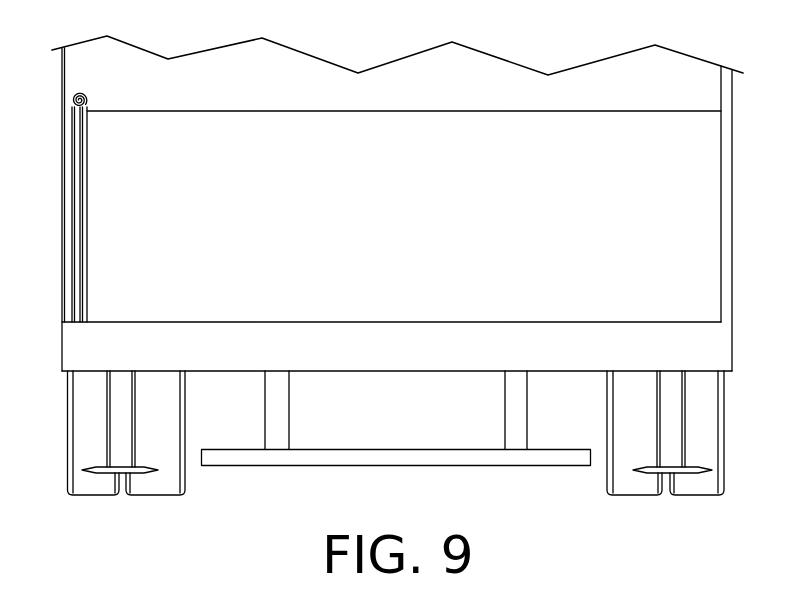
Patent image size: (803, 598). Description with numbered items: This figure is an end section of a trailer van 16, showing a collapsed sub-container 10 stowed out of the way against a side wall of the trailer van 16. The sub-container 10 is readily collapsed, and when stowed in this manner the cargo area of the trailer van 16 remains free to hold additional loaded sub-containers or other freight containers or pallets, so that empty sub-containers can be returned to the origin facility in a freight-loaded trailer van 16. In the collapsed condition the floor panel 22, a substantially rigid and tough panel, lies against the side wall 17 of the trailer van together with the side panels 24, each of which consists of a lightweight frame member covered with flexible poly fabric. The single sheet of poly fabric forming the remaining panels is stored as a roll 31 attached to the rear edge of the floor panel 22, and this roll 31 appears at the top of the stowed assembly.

The sub-container 10 is at (72, 227).
The trailer van 16 is at (732, 127).
The left side wall 17 is at (62, 173).
The floor panel 22 is at (63, 295).
The side panels 24 is at (75, 130).
The roll 31 is at (84, 92).